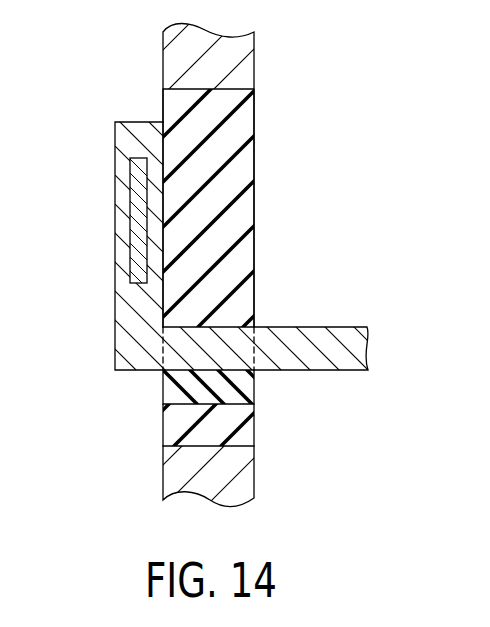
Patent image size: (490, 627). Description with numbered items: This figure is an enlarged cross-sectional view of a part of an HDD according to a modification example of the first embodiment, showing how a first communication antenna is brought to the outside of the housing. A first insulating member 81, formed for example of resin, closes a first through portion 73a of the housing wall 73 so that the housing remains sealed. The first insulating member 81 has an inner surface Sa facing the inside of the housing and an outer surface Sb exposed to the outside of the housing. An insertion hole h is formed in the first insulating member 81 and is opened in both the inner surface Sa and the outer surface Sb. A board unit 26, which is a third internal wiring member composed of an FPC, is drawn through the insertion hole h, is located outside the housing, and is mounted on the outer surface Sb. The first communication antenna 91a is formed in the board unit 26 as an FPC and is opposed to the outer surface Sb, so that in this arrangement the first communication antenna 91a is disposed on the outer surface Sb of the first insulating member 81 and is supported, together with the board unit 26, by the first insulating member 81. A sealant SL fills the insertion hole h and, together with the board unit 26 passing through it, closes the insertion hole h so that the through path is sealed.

The board unit 26 is at (100, 327).
The shaft 73 is at (178, 476).
The first through portion 73a is at (167, 99).
The first insulating member 81 is at (238, 130).
The first communication antenna 91a is at (131, 203).
The inner surface Sa is at (255, 258).
The outer surface Sb is at (163, 297).
The sealant SL is at (177, 394).
The insertion hole h is at (246, 432).